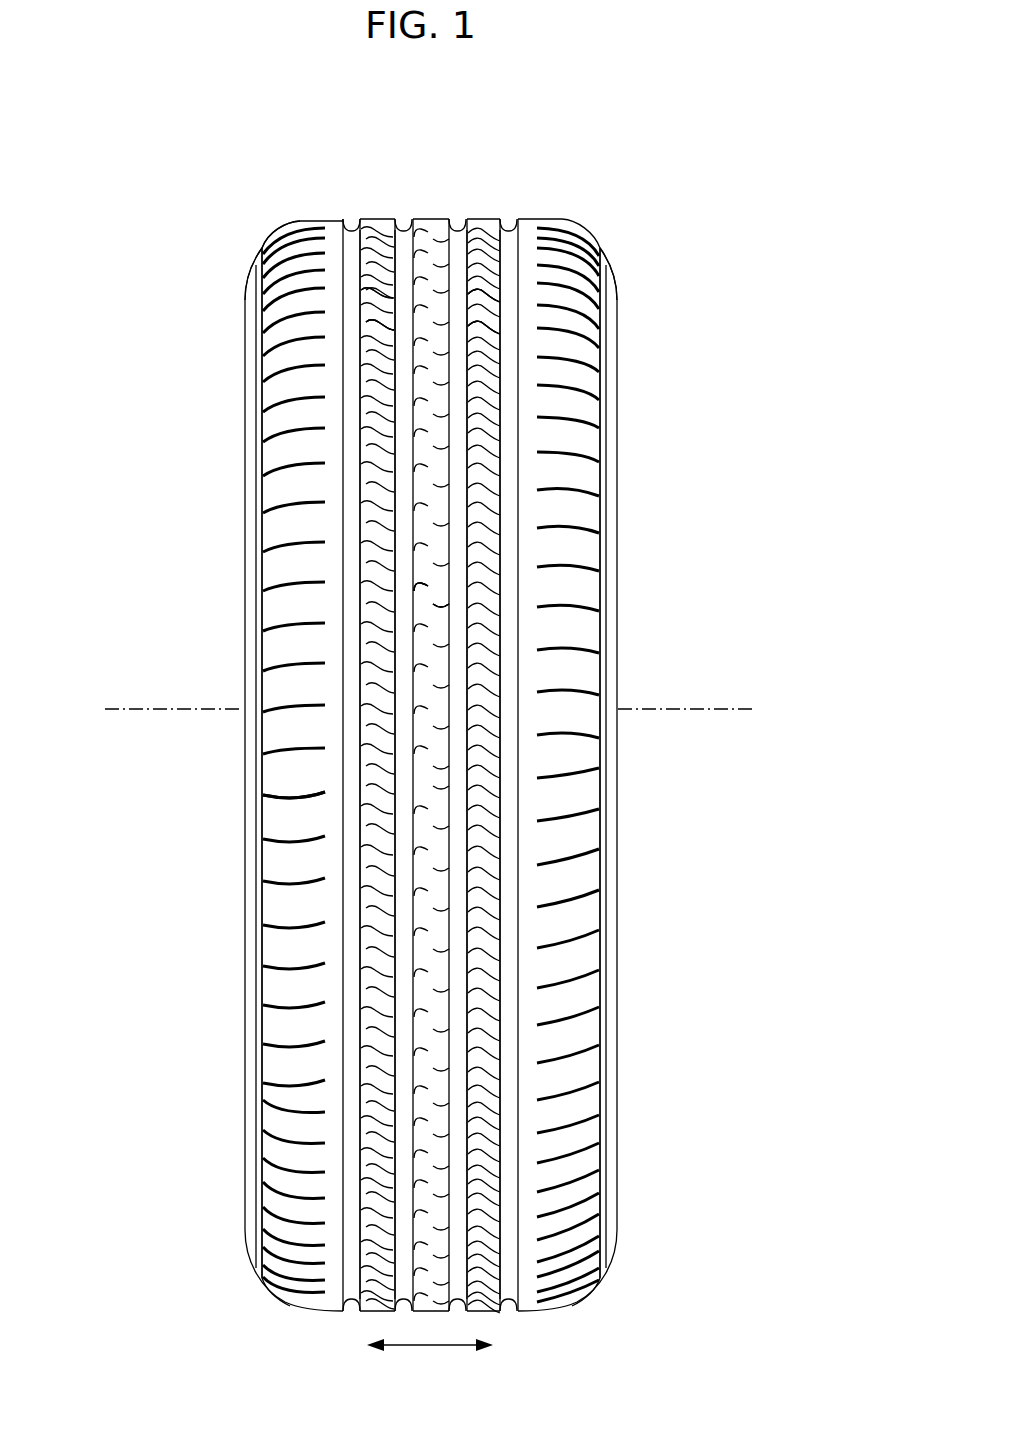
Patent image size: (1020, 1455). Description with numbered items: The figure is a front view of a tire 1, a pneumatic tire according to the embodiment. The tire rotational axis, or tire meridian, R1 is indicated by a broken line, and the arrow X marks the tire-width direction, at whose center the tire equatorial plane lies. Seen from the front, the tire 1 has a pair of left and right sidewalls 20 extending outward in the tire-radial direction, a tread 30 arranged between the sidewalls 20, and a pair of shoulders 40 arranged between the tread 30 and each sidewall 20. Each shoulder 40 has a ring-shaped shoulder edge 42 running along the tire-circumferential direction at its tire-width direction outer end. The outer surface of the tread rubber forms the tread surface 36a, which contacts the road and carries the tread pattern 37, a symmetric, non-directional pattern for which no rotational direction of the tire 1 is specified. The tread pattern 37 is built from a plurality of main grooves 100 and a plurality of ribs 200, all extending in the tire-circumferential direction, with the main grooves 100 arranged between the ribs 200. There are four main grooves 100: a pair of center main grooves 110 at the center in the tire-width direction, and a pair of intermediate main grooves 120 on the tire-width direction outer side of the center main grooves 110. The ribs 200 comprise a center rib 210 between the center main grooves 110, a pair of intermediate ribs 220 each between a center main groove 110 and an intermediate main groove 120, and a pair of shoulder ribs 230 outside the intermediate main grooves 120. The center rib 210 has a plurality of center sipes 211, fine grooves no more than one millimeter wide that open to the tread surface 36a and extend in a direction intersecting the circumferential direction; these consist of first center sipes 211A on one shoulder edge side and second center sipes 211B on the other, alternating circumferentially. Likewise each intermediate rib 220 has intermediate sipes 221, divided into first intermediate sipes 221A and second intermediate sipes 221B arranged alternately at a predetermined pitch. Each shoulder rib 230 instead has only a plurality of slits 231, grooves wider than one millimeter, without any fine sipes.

The tire 1 is at (148, 126).
The sidewall 20 is at (238, 432).
The tread 30 is at (419, 226).
The tread surface 36a is at (296, 220).
The tread pattern 37 is at (290, 777).
The shoulder 40 is at (265, 226).
The shoulder edge 42 is at (262, 870).
The main groove 100 is at (337, 146).
The center main groove 110 is at (403, 228).
The intermediate main groove 120 is at (351, 228).
The rib 200 is at (278, 160).
The center rib 210 is at (440, 210).
The center sipe 211 is at (156, 607).
The first center sipe 211A is at (414, 583).
The second center sipe 211B is at (438, 608).
The intermediate rib 220 is at (385, 217).
The intermediate sipe 221 is at (156, 274).
The first intermediate sipe 221A is at (368, 293).
The second intermediate sipe 221B is at (378, 300).
The shoulder rib 230 is at (303, 224).
The slit 231 is at (300, 553).
The tire rotational axis R1 is at (445, 709).
The tire-width direction X is at (430, 1359).